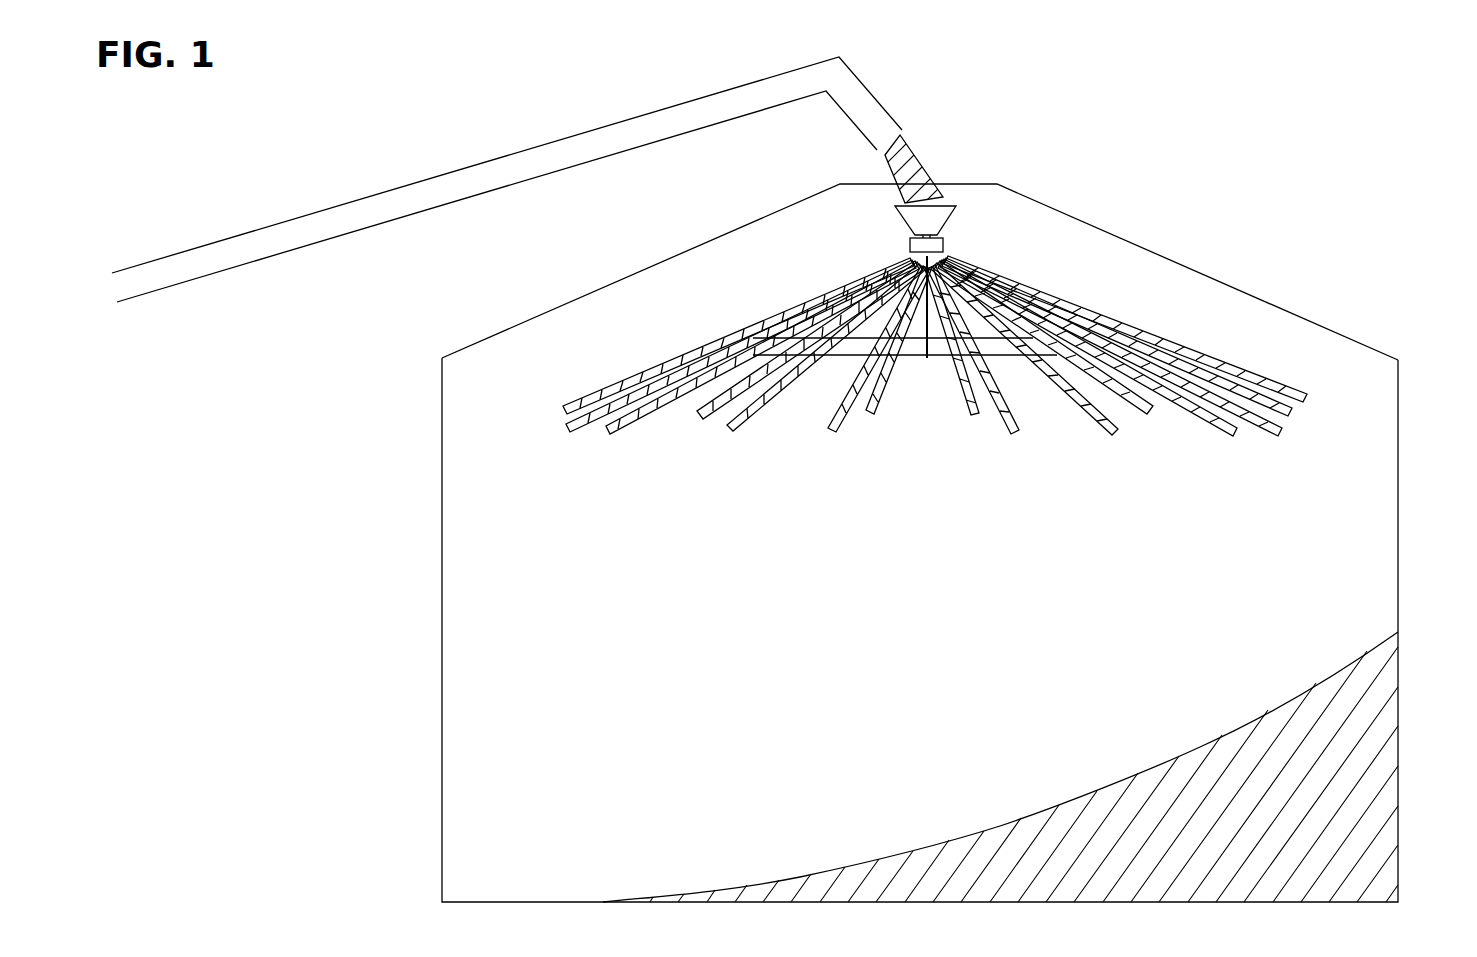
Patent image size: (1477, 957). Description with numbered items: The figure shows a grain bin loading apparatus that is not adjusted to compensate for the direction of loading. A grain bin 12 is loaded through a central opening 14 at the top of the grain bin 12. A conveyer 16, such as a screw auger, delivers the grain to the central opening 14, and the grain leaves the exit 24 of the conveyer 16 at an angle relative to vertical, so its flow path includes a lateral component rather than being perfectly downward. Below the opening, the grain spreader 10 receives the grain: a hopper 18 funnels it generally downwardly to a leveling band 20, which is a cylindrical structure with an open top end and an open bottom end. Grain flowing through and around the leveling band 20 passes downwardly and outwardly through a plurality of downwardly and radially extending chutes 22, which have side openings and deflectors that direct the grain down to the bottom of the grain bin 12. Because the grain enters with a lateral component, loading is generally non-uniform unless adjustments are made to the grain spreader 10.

The grain spreader 10 is at (936, 319).
The grain bin 12 is at (1398, 510).
The central opening 14 is at (983, 185).
The conveyer 16 is at (643, 98).
The hopper 18 is at (952, 217).
The leveling band 20 is at (945, 245).
The chutes 22 is at (1237, 427).
The exit 24 is at (898, 135).